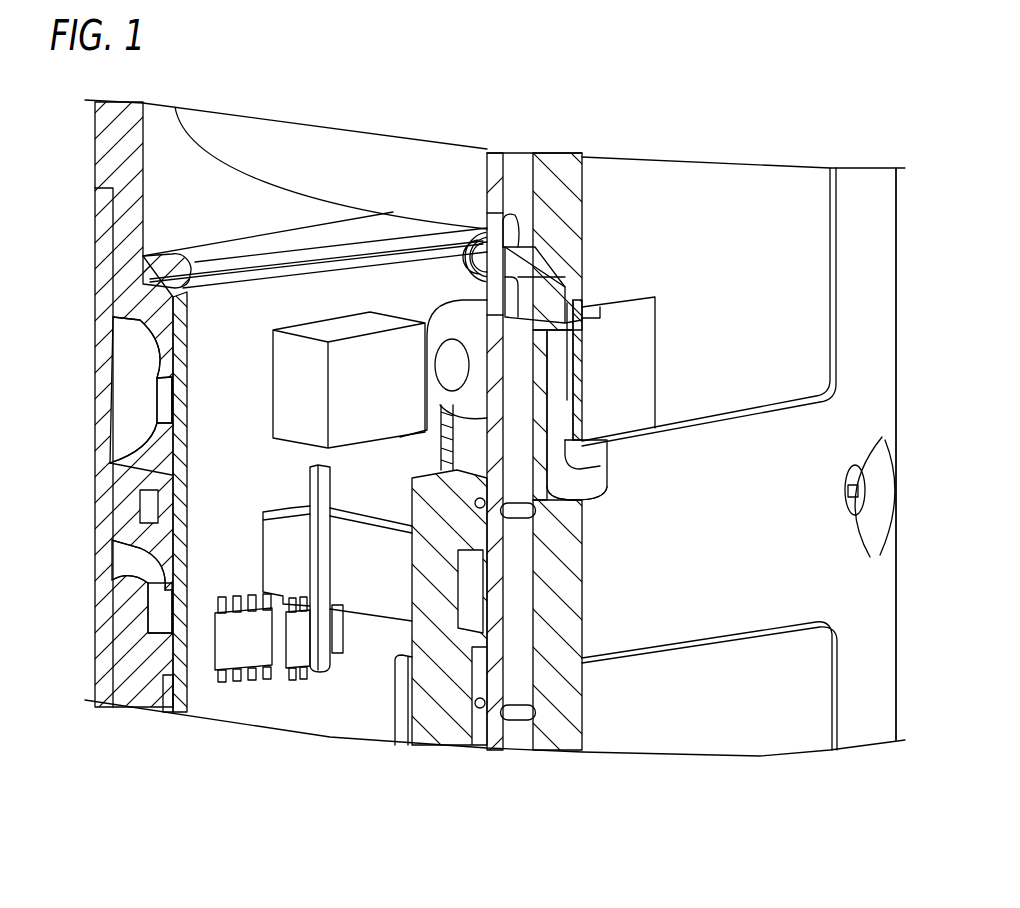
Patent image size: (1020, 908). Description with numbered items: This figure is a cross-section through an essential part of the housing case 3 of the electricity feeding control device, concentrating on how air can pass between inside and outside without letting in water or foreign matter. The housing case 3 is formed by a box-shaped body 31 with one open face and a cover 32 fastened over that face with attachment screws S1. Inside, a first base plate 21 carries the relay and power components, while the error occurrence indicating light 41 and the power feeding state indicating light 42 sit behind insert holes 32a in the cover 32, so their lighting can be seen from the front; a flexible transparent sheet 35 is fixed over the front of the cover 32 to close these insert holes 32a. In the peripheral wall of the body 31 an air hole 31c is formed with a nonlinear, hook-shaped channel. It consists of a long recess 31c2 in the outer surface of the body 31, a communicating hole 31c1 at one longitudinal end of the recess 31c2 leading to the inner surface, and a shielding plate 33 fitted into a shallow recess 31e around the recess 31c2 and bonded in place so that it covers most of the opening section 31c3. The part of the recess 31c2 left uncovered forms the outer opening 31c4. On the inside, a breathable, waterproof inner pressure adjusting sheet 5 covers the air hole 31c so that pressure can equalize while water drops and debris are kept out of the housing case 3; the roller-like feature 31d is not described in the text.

The housing case 3 is at (872, 180).
The inner pressure adjusting sheet 5 is at (505, 290).
The first base plate 21 is at (520, 598).
The body 31 is at (862, 740).
The air hole 31c is at (558, 460).
The communicating hole 31c1 is at (540, 290).
The recess 31c2 is at (555, 383).
The opening section 31c3 is at (582, 360).
The opening 31c4 is at (607, 487).
The roller 31d is at (497, 233).
The recess 31e is at (600, 318).
The cover 32 is at (118, 137).
The insert holes 32a is at (150, 455).
The shielding plate 33 is at (640, 322).
The transparent sheet 35 is at (105, 248).
The error occurrence indicating light 41 is at (156, 683).
The power feeding state indicating light 42 is at (162, 400).
The attachment screws S1 is at (852, 487).